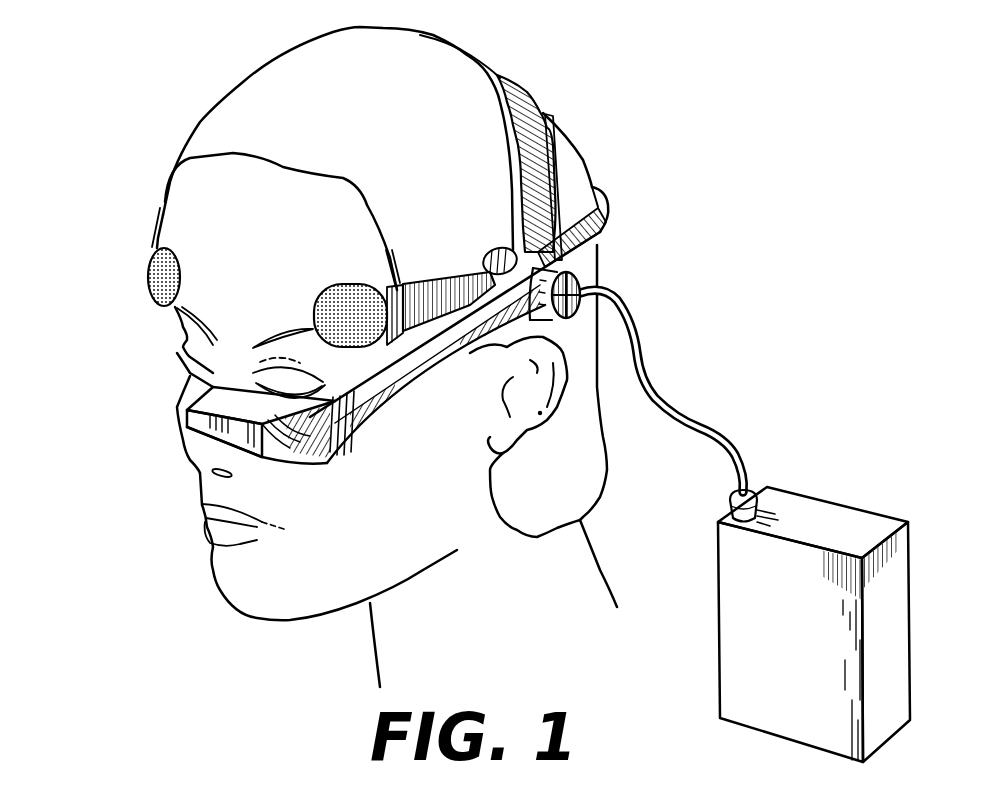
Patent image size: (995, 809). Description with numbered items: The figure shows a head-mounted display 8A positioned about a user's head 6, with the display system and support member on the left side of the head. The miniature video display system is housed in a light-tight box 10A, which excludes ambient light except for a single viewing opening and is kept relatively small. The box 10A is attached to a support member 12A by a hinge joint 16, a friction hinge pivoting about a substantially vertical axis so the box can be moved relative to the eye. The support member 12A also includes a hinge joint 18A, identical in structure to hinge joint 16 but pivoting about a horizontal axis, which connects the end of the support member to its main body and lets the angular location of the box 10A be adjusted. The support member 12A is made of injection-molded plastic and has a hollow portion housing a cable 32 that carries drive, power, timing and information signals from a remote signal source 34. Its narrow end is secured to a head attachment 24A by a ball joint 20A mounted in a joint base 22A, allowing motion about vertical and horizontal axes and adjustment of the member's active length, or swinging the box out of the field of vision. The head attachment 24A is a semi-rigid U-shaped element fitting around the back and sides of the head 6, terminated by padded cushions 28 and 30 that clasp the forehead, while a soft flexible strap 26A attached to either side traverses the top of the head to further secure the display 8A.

The user's head 6 is at (192, 112).
The head-mounted display 8A is at (550, 151).
The light-tight box 10A is at (210, 440).
The support member 12A is at (427, 366).
The hinge joint 16 is at (287, 486).
The hinge joint 18A is at (367, 447).
The ball joint 20A is at (590, 280).
The joint base 22A is at (486, 249).
The head attachment 24A is at (612, 222).
The strap 26A is at (547, 115).
The cushion 28 is at (322, 308).
The cushion 30 is at (150, 258).
The cable 32 is at (390, 276).
The remote signal source 34 is at (722, 611).